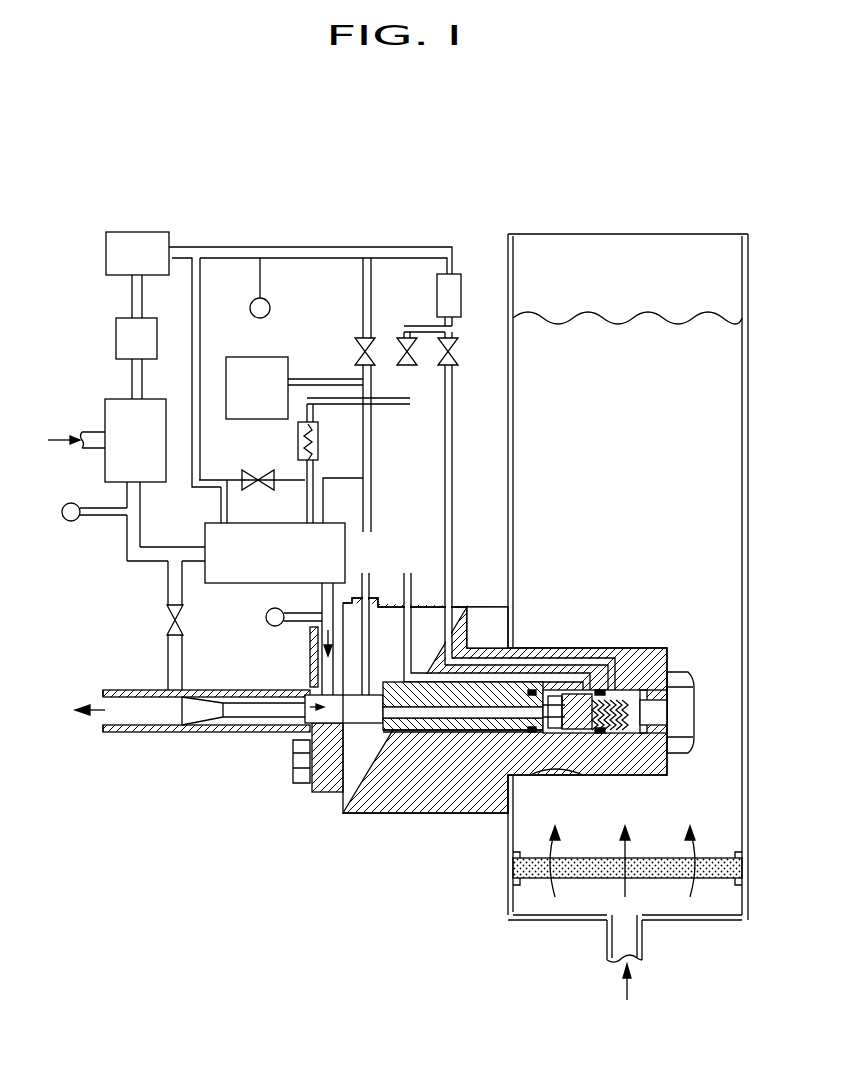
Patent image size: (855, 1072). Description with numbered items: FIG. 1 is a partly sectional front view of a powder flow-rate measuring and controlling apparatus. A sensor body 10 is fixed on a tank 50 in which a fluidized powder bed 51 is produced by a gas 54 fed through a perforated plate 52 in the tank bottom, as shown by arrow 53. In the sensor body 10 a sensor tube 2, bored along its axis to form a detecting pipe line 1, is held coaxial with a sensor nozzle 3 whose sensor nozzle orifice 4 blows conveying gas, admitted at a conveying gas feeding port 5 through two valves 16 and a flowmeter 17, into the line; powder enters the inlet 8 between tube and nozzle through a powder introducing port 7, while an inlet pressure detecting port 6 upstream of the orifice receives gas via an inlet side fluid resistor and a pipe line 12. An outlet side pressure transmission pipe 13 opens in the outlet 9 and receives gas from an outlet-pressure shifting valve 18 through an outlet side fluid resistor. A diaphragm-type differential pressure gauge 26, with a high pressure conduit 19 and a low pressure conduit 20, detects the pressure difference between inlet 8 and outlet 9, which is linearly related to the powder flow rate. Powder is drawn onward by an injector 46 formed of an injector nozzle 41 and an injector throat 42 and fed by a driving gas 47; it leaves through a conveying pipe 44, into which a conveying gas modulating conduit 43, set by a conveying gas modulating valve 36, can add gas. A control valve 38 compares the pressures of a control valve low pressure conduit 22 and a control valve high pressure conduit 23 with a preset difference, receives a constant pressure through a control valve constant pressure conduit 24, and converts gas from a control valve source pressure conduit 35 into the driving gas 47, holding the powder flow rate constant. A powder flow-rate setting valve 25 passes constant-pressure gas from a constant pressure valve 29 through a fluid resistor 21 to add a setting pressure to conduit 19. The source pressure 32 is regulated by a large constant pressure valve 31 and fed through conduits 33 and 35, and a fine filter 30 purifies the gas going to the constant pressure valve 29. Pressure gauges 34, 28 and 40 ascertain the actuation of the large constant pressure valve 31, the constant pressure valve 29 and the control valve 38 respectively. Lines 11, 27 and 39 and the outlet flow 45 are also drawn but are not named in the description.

The detecting pipe line 1 is at (463, 718).
The sensor tube 2 is at (373, 712).
The sensor nozzle 3 is at (562, 736).
The sensor nozzle orifice 4 is at (545, 758).
The conveying gas feeding port 5 is at (645, 690).
The inlet pressure detecting port 6 is at (597, 738).
The powder introducing port 7 is at (559, 743).
The inlet 8 is at (553, 695).
The outlet 9 is at (348, 786).
The sensor body 10 is at (400, 800).
The gas line 11 is at (453, 540).
The pipe line 12 is at (409, 586).
The outlet side pressure transmission pipe 13 is at (369, 587).
The valve 16 is at (455, 358).
The flowmeter 17 is at (451, 297).
The outlet-pressure shifting valve 18 is at (372, 358).
The high pressure conduit 19 is at (380, 405).
The low pressure conduit 20 is at (312, 378).
The fluid resistor 21 is at (318, 445).
The control valve low pressure conduit 22 is at (324, 515).
The control valve high pressure conduit 23 is at (305, 515).
The control valve constant pressure conduit 24 is at (227, 513).
The powder flow-rate setting valve 25 is at (258, 470).
The differential pressure gauge 26 is at (262, 372).
The control line 27 is at (327, 248).
The pressure gauge 28 is at (270, 308).
The constant pressure valve 29 is at (153, 248).
The fine filter 30 is at (150, 322).
The large constant pressure valve 31 is at (150, 408).
The source pressure 32 is at (50, 440).
The conduit 33 is at (135, 506).
The pressure gauge 34 is at (72, 522).
The control valve source pressure conduit 35 is at (183, 555).
The conveying gas modulating valve 36 is at (167, 627).
The control valve 38 is at (250, 583).
The pipe 39 is at (322, 600).
The pressure gauge 40 is at (268, 622).
The injector nozzle 41 is at (303, 687).
The injector throat 42 is at (253, 688).
The conveying gas modulating conduit 43 is at (175, 667).
The conveying pipe 44 is at (142, 732).
The outlet flow 45 is at (100, 703).
The injector 46 is at (291, 663).
The driving gas 47 is at (318, 652).
The tank 50 is at (508, 250).
The fluidized powder bed 51 is at (592, 342).
The perforated plate 52 is at (542, 880).
The arrow 53 is at (695, 832).
The gas 54 is at (630, 990).